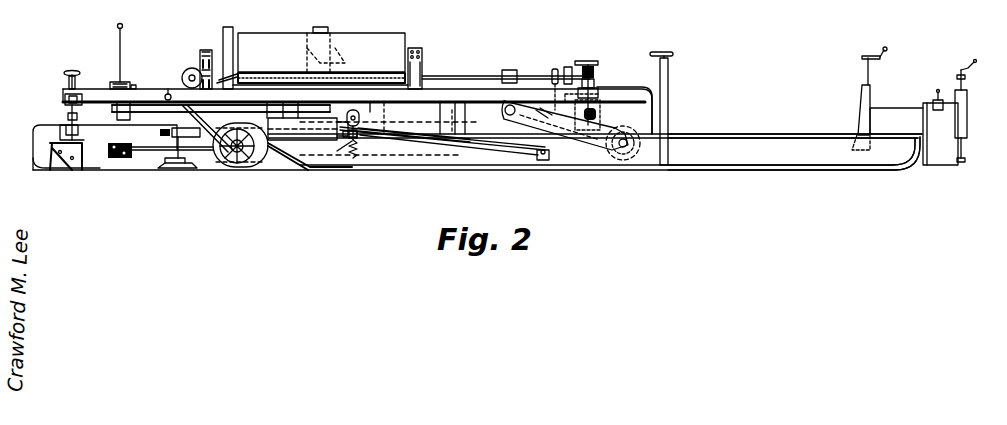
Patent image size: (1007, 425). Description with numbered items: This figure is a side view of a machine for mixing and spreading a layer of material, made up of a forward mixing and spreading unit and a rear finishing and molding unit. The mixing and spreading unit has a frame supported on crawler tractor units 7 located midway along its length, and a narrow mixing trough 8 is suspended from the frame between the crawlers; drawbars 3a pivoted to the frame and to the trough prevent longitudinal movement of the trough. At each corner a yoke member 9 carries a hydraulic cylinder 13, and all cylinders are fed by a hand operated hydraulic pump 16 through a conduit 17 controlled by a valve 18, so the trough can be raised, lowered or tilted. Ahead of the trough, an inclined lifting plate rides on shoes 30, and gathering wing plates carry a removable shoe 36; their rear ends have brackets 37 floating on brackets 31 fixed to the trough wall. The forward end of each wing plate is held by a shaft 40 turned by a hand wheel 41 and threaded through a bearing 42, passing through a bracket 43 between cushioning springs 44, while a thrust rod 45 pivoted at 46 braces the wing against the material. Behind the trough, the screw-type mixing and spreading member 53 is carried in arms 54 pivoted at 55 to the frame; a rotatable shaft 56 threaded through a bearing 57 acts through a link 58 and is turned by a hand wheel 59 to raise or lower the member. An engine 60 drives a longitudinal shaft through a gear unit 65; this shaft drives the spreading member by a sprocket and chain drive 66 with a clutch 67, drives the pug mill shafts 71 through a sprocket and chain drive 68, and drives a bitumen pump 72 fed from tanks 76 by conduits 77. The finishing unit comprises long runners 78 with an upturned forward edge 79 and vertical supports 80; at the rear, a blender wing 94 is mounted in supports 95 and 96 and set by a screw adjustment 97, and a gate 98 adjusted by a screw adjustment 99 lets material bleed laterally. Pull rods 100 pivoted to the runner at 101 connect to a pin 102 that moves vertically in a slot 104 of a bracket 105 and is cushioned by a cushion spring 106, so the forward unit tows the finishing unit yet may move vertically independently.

The drawbar 3a is at (150, 110).
The crawler tractor unit 7 is at (238, 166).
The mixing trough 8 is at (172, 133).
The yoke member 9 is at (418, 50).
The hydraulic cylinder 13 is at (425, 75).
The hand operated hydraulic pump 16 is at (116, 82).
The conduit 17 is at (168, 94).
The valve 18 is at (134, 84).
The shoe 30 is at (186, 170).
The bracket 31 is at (200, 168).
The removable shoe 36 is at (68, 162).
The bracket 37 is at (172, 169).
The shaft 40 is at (68, 80).
The hand wheel 41 is at (72, 70).
The bearing 42 is at (64, 98).
The bracket 43 is at (64, 130).
The cushioning spring 44 is at (68, 117).
The thrust rod 45 is at (150, 151).
The pivotal connection 46 is at (118, 159).
The mixing and spreading member 53 is at (636, 152).
The arm 54 is at (548, 130).
The pivotal connection 55 is at (503, 110).
The rotatable shaft 56 is at (594, 66).
The bearing 57 is at (605, 88).
The link 58 is at (598, 114).
The hand wheel 59 is at (588, 61).
The engine 60 is at (262, 33).
The gear unit 65 is at (343, 62).
The sprocket and chain drive 66 is at (596, 84).
The clutch 67 is at (567, 67).
The sprocket and chain drive 68 is at (551, 76).
The shaft 71 is at (506, 148).
The pump 72 is at (192, 68).
The tank 76 is at (352, 40).
The conduit 77 is at (236, 79).
The runner 78 is at (722, 165).
The upturned forward edge 79 is at (293, 170).
The vertical support 80 is at (670, 84).
The blender wing 94 is at (890, 110).
The support 95 is at (858, 106).
The support 96 is at (964, 110).
The screw adjustment 97 is at (966, 65).
The gate 98 is at (946, 150).
The screw adjustment 99 is at (938, 95).
The pull rod 100 is at (495, 149).
The pivotal connection 101 is at (544, 161).
The pin 102 is at (360, 116).
The slot 104 is at (362, 139).
The bracket 105 is at (346, 147).
The cushion spring 106 is at (354, 159).